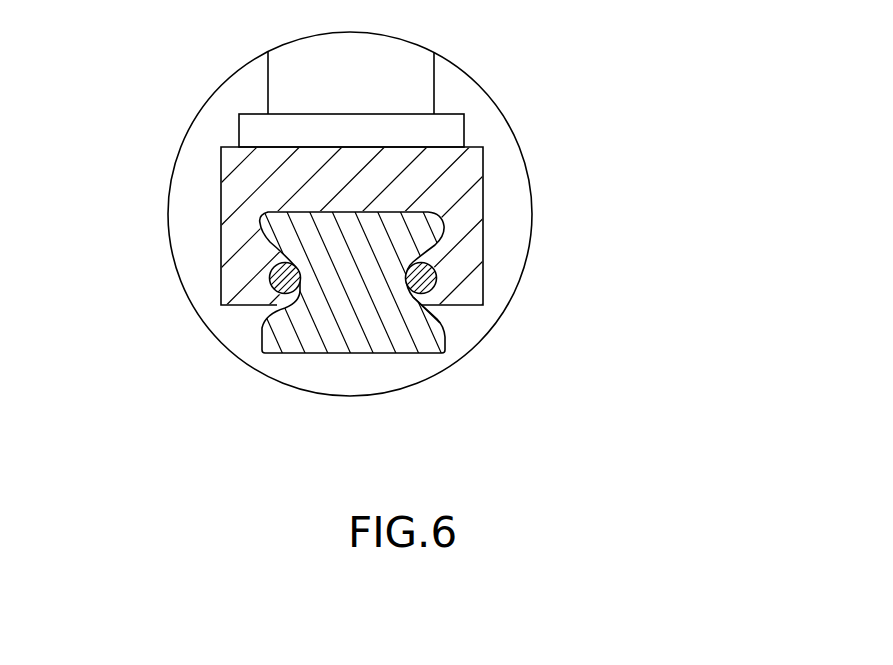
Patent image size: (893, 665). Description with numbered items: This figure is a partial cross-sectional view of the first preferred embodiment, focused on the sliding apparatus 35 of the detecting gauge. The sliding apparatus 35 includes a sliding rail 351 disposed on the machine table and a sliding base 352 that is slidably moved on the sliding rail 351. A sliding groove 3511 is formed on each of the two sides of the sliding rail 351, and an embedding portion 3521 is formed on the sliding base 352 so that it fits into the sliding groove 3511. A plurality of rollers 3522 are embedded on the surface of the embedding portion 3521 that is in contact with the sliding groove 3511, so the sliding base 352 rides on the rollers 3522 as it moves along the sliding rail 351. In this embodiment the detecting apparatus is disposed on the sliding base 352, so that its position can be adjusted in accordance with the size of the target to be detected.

The sliding apparatus 35 is at (478, 143).
The sliding rail 351 is at (423, 343).
The sliding groove 3511 is at (430, 310).
The sliding base 352 is at (453, 170).
The embedding portion 3521 is at (293, 312).
The rollers 3522 is at (428, 278).